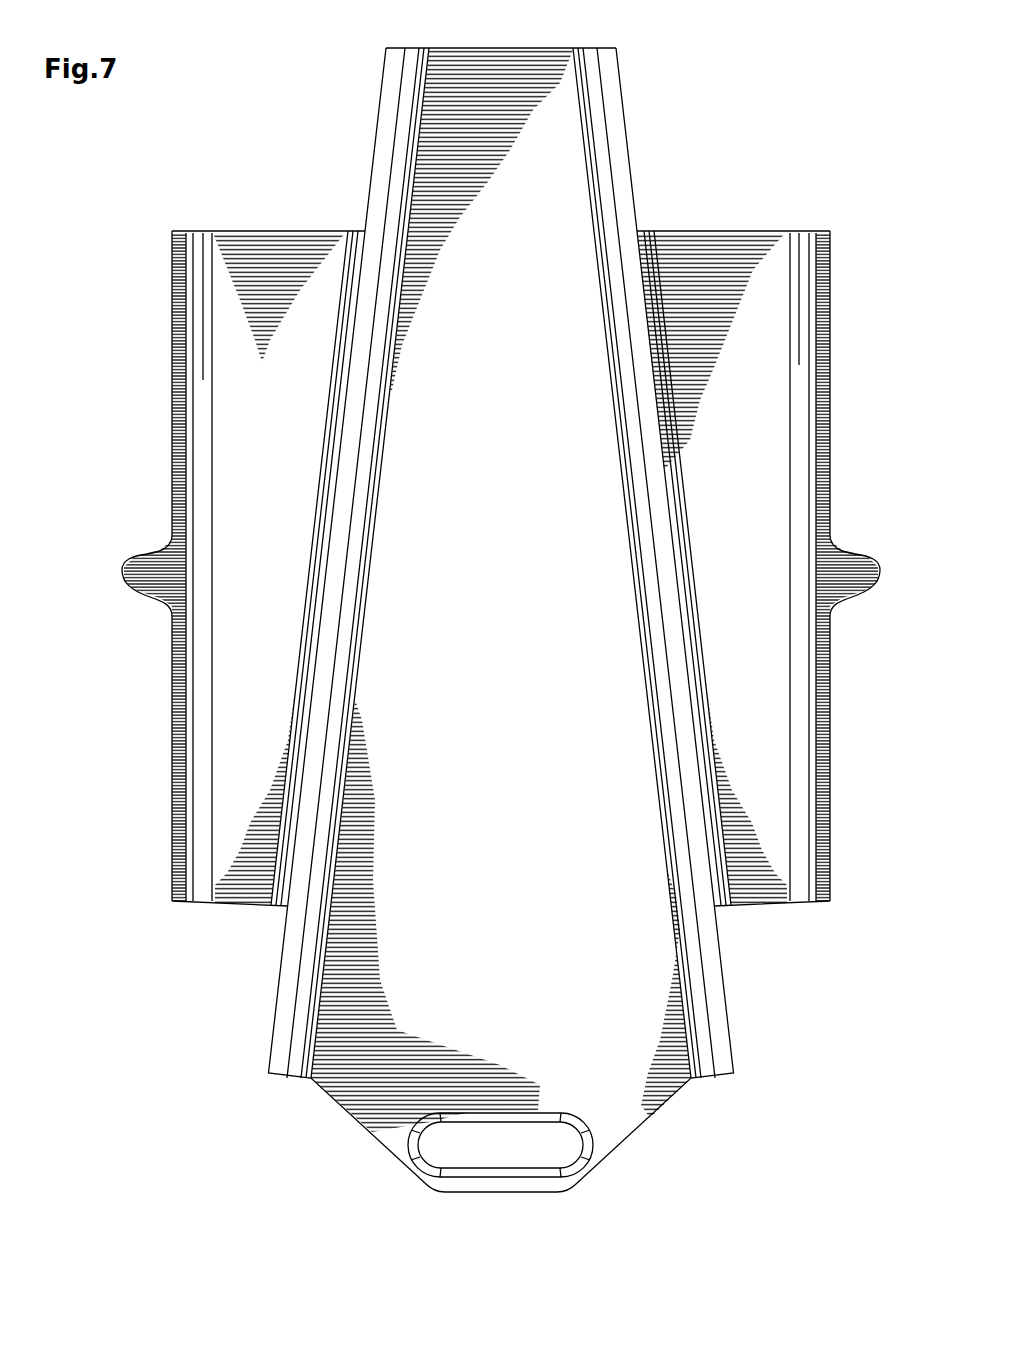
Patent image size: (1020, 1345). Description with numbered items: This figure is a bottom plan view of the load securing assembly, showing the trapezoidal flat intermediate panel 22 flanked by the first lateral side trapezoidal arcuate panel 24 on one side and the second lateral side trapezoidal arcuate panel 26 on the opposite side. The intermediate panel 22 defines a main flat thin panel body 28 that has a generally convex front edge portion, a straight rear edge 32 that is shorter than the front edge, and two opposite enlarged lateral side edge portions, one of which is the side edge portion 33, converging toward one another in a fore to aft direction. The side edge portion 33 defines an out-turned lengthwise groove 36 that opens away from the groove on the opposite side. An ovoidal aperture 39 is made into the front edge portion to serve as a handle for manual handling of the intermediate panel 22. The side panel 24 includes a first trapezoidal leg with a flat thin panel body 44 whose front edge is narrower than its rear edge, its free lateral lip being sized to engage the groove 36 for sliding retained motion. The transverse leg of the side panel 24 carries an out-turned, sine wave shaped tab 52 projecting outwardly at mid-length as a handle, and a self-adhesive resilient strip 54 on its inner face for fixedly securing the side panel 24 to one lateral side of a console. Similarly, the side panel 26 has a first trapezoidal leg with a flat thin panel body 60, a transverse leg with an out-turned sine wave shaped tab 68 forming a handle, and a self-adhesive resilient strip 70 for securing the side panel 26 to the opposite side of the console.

The trapezoidal flat intermediate panel 22 is at (543, 229).
The first lateral side trapezoidal arcuate panel 24 is at (724, 274).
The second lateral side trapezoidal arcuate panel 26 is at (266, 270).
The main flat thin panel body 28 is at (500, 634).
The straight rear edge 32 is at (500, 49).
The enlarged lateral side edge portion 33 is at (706, 967).
The out-turned lengthwise groove 36 is at (332, 768).
The ovoidal aperture 39 is at (510, 1172).
The flat thin panel body 44 is at (753, 640).
The out-turned tab 52 is at (843, 587).
The self-adhesive resilient strip 54 is at (797, 806).
The flat thin panel body 60 is at (266, 624).
The out-turned tab 68 is at (135, 582).
The self-adhesive resilient strip 70 is at (195, 353).